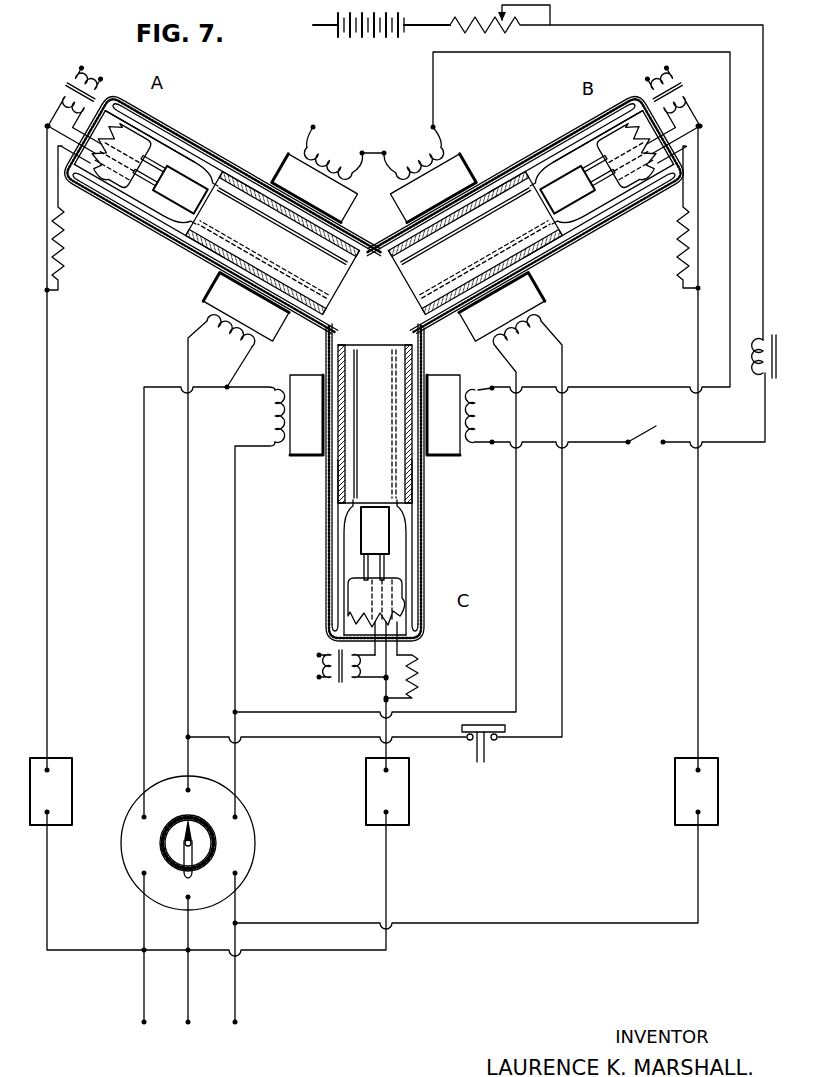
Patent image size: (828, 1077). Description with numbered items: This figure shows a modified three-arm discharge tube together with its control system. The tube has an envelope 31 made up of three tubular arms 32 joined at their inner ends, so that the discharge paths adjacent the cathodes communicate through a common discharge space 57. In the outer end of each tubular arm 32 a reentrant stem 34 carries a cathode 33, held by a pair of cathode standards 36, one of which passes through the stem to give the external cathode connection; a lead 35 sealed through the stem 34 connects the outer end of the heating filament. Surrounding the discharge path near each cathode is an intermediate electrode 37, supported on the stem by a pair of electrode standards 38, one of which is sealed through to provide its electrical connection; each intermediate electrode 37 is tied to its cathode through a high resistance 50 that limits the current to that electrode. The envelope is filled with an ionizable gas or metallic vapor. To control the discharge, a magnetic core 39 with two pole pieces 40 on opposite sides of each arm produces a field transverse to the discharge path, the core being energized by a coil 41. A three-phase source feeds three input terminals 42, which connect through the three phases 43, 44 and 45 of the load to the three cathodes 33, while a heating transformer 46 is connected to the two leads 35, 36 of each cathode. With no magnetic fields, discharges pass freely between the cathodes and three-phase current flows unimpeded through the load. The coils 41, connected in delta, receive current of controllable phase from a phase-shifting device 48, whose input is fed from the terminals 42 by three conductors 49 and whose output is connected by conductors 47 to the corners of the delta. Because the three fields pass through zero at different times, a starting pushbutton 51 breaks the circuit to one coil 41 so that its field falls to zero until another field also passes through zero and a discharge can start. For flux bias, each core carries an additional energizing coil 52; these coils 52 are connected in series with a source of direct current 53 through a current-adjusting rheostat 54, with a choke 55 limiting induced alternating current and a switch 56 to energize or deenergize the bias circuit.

The envelope 31 is at (327, 550).
The tubular arm 32 is at (153, 247).
The cathode 33 is at (583, 254).
The reentrant stem 34 is at (143, 137).
The lead 35 is at (163, 213).
The cathode standard 36 is at (158, 157).
The intermediate electrode 37 is at (307, 231).
The electrode standard 38 is at (220, 172).
The magnetic core 39 is at (344, 216).
The pole piece 40 is at (290, 181).
The coil 41 is at (200, 318).
The input terminal 42 is at (144, 1022).
The phase of three-phase load 43 is at (67, 762).
The phase of three-phase load 44 is at (708, 813).
The phase of three-phase load 45 is at (403, 814).
The heating transformer 46 is at (62, 92).
The conductor 47 is at (235, 782).
The phase-shifting device 48 is at (247, 860).
The conductor 49 is at (235, 922).
The high resistance 50 is at (57, 270).
The starting pushbutton 51 is at (480, 763).
The additional energizing coil 52 is at (328, 152).
The source of direct current 53 is at (392, 35).
The current-adjusting rheostat 54 is at (493, 30).
The choke 55 is at (758, 375).
The switch 56 is at (653, 444).
The common discharge space 57 is at (374, 297).